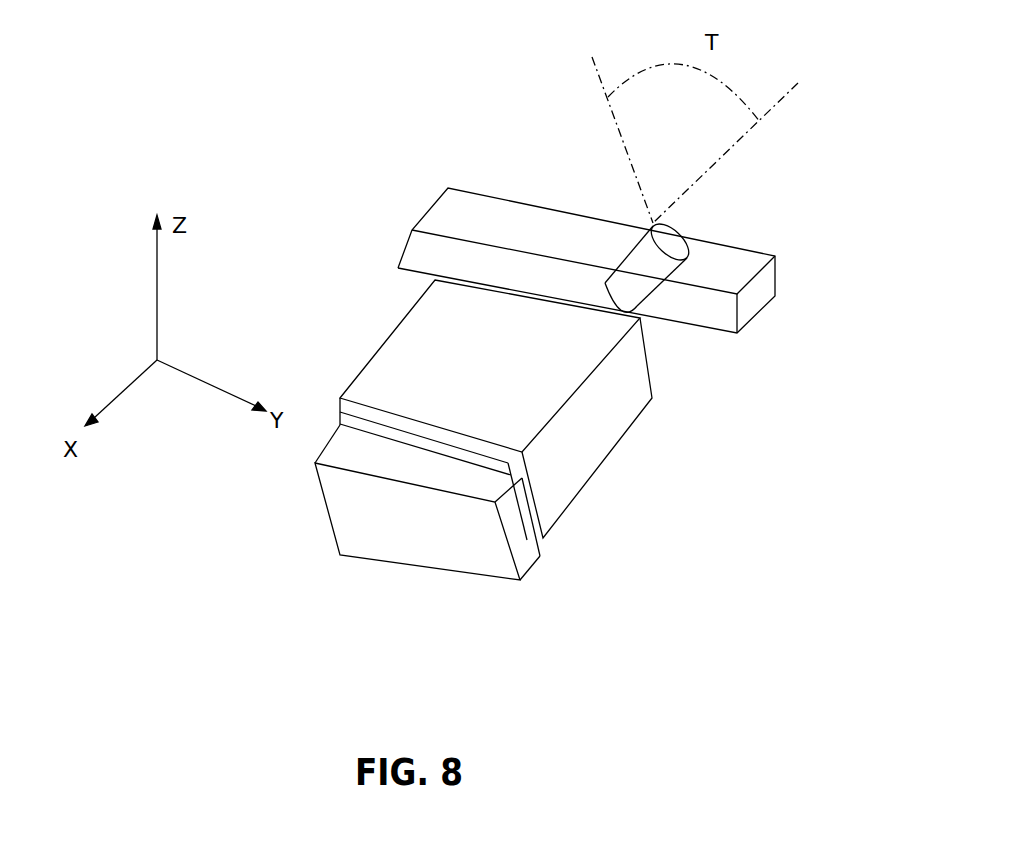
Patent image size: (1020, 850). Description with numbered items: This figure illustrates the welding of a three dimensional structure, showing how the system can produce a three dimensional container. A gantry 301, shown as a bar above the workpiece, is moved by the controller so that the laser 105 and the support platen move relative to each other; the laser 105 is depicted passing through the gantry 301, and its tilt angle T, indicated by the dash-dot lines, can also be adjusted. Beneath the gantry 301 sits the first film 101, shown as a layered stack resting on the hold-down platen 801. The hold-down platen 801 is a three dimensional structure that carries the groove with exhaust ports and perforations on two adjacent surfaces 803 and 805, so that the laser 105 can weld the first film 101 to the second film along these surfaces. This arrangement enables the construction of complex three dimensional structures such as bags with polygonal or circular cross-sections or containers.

The gantry 301 is at (575, 250).
The laser 105 is at (642, 280).
The first film 101 is at (532, 527).
The adjacent surface 805 is at (522, 527).
The adjacent surface 803 is at (338, 450).
The hold-down platen 801 is at (427, 521).